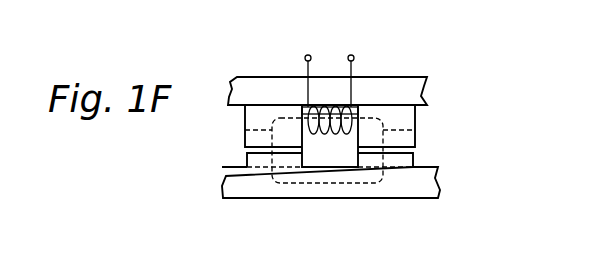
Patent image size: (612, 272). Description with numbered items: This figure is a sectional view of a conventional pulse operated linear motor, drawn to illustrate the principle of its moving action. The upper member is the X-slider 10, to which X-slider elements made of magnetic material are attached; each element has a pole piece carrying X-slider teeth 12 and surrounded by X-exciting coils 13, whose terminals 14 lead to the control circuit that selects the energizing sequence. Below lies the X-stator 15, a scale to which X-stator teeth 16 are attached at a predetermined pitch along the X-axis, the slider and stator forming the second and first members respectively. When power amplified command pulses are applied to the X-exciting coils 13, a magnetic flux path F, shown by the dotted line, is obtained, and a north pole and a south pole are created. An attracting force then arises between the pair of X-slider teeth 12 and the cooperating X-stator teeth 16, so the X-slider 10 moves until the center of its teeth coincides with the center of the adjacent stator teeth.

The X-slider 10 is at (424, 95).
The X-slider teeth 12 is at (410, 134).
The X-exciting coils 13 is at (325, 136).
The terminal 14 is at (308, 57).
The X-stator 15 is at (320, 190).
The X-stator teeth 16 is at (250, 161).
The magnetic flux path F is at (359, 184).